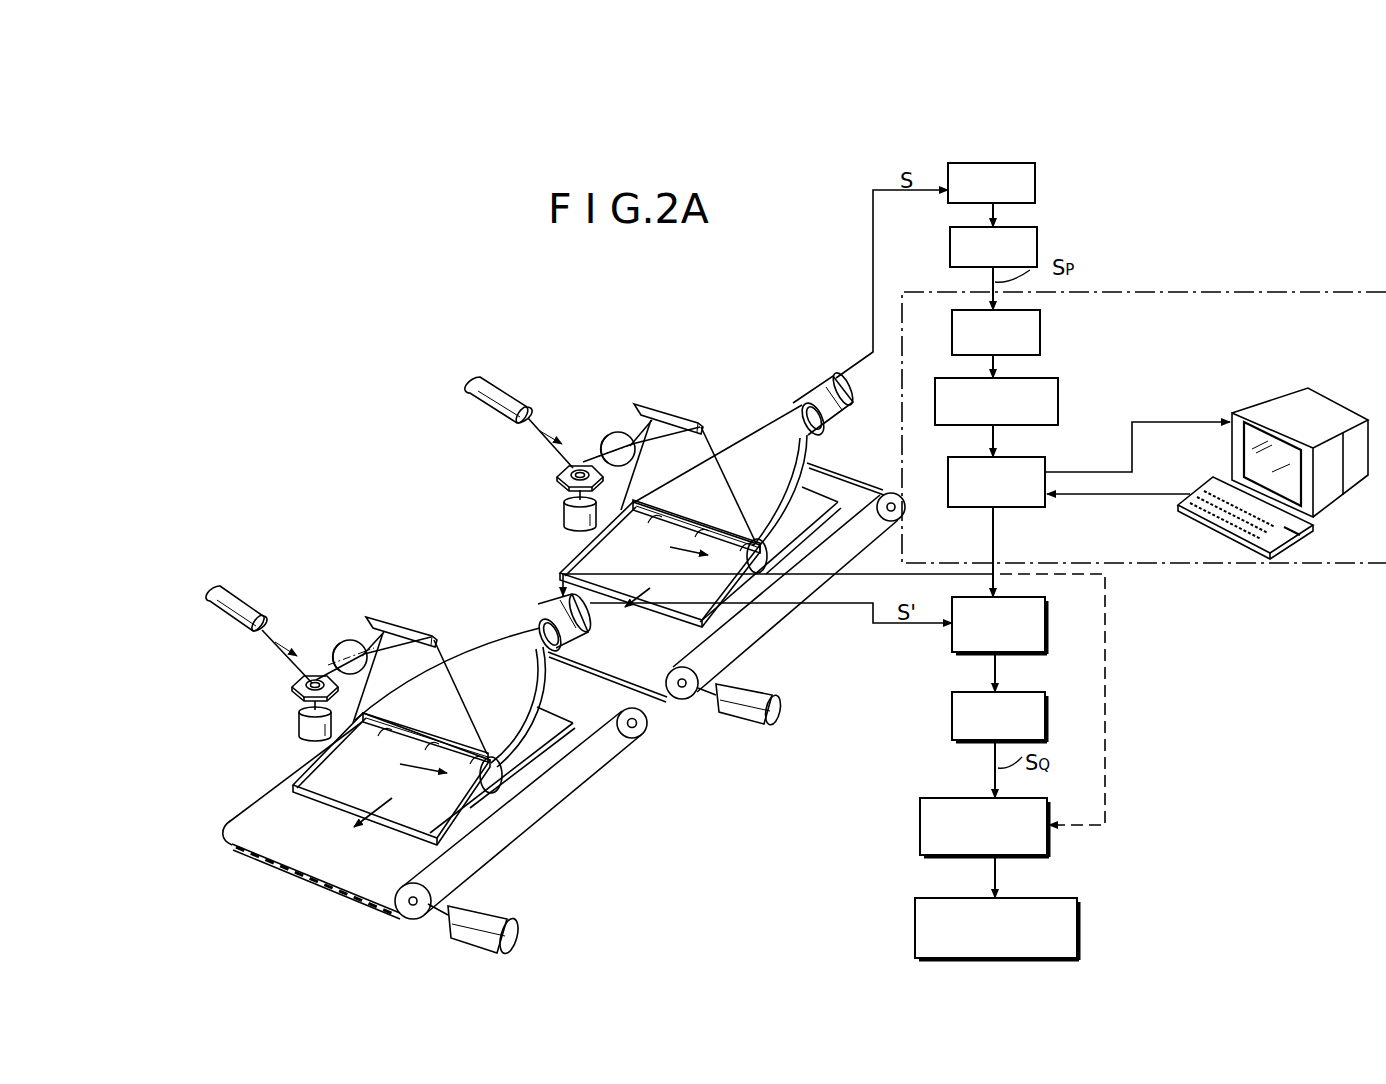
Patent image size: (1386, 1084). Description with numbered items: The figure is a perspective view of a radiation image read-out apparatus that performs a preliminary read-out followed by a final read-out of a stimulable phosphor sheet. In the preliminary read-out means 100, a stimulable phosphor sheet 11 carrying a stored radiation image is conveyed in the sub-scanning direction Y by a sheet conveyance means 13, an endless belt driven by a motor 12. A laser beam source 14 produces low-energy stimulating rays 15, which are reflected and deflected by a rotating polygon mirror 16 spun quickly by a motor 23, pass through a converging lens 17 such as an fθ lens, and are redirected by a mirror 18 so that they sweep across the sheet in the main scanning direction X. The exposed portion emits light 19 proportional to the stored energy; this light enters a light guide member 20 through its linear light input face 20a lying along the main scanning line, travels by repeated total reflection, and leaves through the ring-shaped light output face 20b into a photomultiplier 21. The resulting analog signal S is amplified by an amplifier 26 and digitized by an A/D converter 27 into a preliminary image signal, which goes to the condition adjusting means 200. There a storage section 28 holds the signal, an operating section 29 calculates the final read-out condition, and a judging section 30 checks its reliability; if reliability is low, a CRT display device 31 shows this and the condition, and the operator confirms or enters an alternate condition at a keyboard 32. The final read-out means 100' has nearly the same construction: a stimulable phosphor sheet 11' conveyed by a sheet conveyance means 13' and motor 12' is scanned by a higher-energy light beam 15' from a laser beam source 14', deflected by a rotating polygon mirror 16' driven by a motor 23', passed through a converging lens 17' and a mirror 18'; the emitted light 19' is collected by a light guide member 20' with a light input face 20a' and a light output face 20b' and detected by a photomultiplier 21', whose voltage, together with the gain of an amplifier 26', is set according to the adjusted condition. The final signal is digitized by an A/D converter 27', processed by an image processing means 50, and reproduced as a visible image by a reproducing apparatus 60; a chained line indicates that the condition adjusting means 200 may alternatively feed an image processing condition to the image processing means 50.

The preliminary read-out means 100 is at (627, 359).
The laser beam source 14 is at (502, 393).
The stimulating rays 15 is at (551, 430).
The rotating polygon mirror 16 is at (552, 471).
The converging lens 17 is at (641, 425).
The mirror 18 is at (688, 461).
The emitted light 19 is at (688, 530).
The light guide member 20 is at (720, 466).
The light input face 20a is at (801, 571).
The light output face 20b is at (849, 452).
The photomultiplier 21 is at (819, 390).
The motor 23 is at (550, 510).
The stimulable phosphor sheet 11 is at (694, 574).
The motor 12 is at (758, 693).
The sheet conveyance means 13 is at (785, 581).
The final read-out means 100' is at (340, 560).
The laser beam source 14' is at (250, 602).
The light beam 15' is at (293, 644).
The rotating polygon mirror 16' is at (286, 679).
The converging lens 17' is at (373, 634).
The mirror 18' is at (420, 674).
The emitted light 19' is at (411, 753).
The light guide member 20' is at (450, 677).
The light input face 20a' is at (548, 791).
The light output face 20b' is at (622, 641).
The photomultiplier 21' is at (544, 603).
The motor 23' is at (284, 721).
The stimulable phosphor sheet 11' is at (435, 783).
The motor 12' is at (491, 915).
The sheet conveyance means 13' is at (445, 785).
The amplifier 26 is at (1019, 183).
The A/D converter 27 is at (1022, 245).
The storage section 28 is at (1040, 332).
The operating section 29 is at (1058, 398).
The judging section 30 is at (1030, 508).
The CRT display device 31 is at (1277, 395).
The keyboard 32 is at (1307, 522).
The condition adjusting means 200 is at (1205, 290).
The amplifier 26' is at (1021, 625).
The A/D converter 27' is at (1022, 711).
The image processing means 50 is at (1047, 810).
The reproducing apparatus 60 is at (1077, 898).